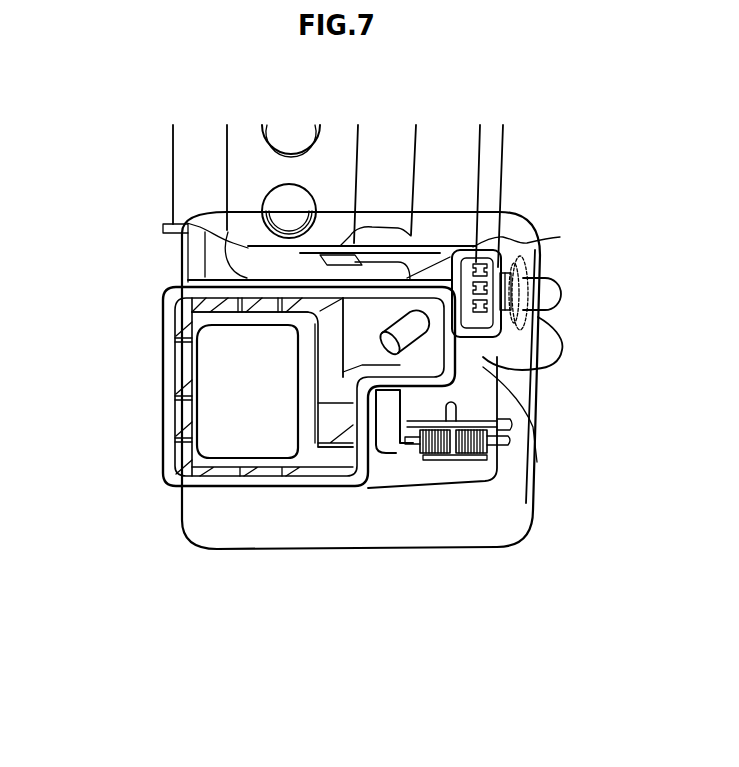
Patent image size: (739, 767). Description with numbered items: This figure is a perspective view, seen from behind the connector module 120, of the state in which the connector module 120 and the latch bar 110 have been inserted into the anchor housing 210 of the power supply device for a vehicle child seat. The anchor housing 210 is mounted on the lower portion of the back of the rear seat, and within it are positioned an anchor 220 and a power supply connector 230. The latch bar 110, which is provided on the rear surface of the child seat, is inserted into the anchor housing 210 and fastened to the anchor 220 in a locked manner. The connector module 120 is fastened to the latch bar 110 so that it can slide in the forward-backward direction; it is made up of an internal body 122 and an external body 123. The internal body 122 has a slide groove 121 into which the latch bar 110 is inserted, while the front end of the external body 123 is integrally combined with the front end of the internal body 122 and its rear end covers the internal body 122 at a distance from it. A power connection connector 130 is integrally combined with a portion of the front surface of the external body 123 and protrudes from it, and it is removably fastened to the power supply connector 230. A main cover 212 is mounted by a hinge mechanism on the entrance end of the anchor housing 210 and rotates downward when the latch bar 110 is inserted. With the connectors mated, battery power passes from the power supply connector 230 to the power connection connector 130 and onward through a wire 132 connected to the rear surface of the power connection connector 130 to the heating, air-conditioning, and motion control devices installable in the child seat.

The latch bar 110 is at (218, 432).
The connector module 120 is at (328, 483).
The slide groove 121 is at (207, 320).
The internal body 122 is at (327, 367).
The external body 123 is at (170, 370).
The power connection connector 130 is at (448, 355).
The wire 132 is at (403, 336).
The anchor housing 210 is at (482, 551).
The main cover 212 is at (388, 422).
The anchor 220 is at (483, 355).
The power supply connector 230 is at (470, 252).